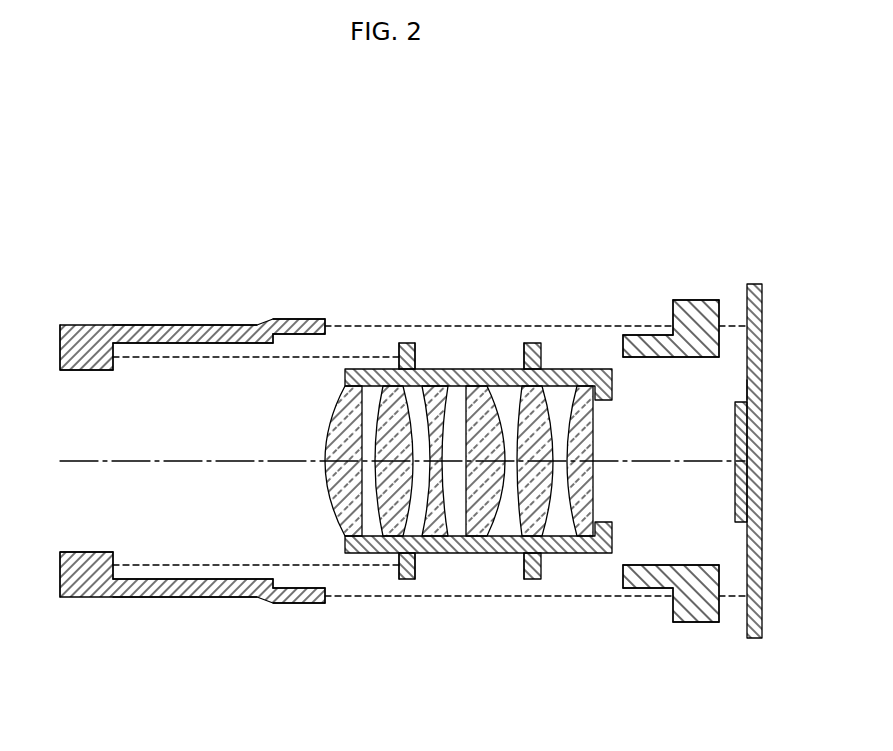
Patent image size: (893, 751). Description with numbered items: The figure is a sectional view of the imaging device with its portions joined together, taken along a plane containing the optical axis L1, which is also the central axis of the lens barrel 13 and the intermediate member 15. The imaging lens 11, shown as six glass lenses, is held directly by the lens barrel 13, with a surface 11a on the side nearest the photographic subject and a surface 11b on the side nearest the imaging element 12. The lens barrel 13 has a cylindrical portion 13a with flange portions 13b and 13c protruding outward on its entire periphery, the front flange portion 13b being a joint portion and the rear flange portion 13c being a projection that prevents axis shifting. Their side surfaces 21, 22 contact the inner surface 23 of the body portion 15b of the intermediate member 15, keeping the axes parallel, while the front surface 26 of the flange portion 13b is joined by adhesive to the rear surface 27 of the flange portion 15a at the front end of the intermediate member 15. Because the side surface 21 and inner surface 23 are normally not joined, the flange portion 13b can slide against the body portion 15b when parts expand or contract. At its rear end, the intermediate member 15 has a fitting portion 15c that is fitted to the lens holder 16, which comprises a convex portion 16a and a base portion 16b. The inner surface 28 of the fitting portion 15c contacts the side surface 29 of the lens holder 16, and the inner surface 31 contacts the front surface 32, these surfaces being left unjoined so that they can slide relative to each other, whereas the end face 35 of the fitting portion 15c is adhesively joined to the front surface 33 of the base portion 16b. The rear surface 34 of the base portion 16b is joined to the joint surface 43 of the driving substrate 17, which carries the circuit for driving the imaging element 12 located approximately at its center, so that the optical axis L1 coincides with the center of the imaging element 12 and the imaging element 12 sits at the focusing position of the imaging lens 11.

The optical axis L1 is at (100, 461).
The intermediate member 15 is at (163, 624).
The flange portion 15a is at (80, 366).
The body portion 15b is at (195, 325).
The fitting portion 15c is at (287, 320).
The end face 35 is at (323, 319).
The rear surface 27 is at (115, 346).
The inner surface 23 is at (186, 345).
The inner surface 31 is at (278, 340).
The inner surface 28 is at (314, 335).
The lens barrel 13 is at (478, 470).
The cylindrical portion 13a is at (470, 376).
The flange portion 13b is at (416, 358).
The flange portion 13c is at (524, 356).
The side surface 21 is at (407, 343).
The side surface 22 is at (532, 343).
The front surface 26 is at (399, 357).
The imaging lens 11 is at (457, 461).
The surface 11a is at (333, 420).
The surface 11b is at (593, 493).
The lens holder 16 is at (670, 650).
The convex portion 16a is at (655, 350).
The base portion 16b is at (688, 322).
The front surface 32 is at (623, 345).
The side surface 29 is at (640, 335).
The front surface 33 is at (673, 330).
The rear surface 34 is at (720, 310).
The joint surface 43 is at (748, 290).
The driving substrate 17 is at (747, 385).
The imaging element 12 is at (742, 426).